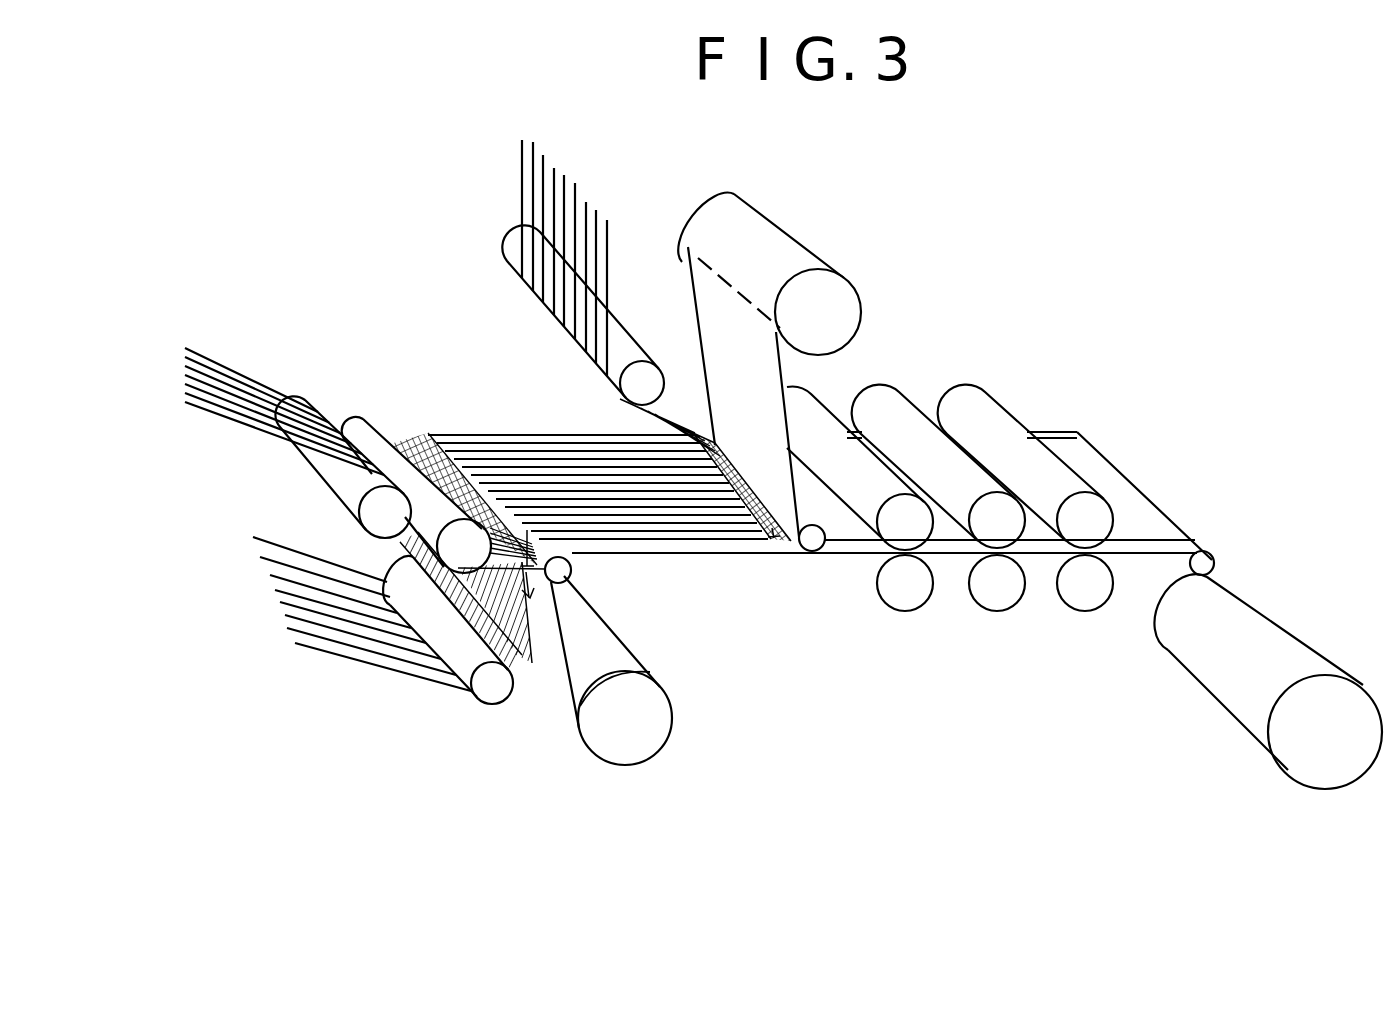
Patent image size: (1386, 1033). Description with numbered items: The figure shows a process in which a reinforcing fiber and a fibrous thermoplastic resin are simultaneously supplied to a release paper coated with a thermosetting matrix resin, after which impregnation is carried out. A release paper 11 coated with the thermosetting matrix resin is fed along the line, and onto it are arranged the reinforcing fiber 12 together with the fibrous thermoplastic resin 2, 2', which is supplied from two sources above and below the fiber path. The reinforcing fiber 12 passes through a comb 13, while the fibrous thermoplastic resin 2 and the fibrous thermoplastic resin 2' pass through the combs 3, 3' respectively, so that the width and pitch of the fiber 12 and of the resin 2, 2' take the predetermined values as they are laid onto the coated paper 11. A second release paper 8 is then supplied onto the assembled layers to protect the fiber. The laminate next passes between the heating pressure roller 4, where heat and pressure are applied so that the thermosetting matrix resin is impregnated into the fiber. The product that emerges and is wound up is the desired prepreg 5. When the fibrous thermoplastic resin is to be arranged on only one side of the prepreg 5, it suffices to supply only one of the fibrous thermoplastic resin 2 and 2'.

The fibrous thermoplastic resin 2 is at (362, 641).
The fibrous thermoplastic resin 2' is at (587, 298).
The comb 3 is at (871, 659).
The comb 3' is at (618, 522).
The heating pressure roller 4 is at (995, 383).
The prepreg 5 is at (1224, 563).
The release paper 8 is at (808, 243).
The release paper 11 is at (550, 692).
The reinforcing fiber 12 is at (281, 396).
The comb 13 is at (413, 438).